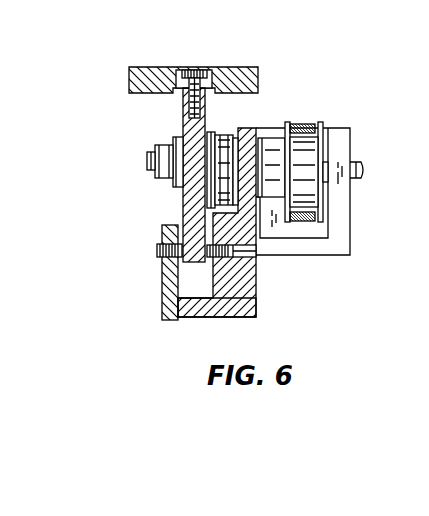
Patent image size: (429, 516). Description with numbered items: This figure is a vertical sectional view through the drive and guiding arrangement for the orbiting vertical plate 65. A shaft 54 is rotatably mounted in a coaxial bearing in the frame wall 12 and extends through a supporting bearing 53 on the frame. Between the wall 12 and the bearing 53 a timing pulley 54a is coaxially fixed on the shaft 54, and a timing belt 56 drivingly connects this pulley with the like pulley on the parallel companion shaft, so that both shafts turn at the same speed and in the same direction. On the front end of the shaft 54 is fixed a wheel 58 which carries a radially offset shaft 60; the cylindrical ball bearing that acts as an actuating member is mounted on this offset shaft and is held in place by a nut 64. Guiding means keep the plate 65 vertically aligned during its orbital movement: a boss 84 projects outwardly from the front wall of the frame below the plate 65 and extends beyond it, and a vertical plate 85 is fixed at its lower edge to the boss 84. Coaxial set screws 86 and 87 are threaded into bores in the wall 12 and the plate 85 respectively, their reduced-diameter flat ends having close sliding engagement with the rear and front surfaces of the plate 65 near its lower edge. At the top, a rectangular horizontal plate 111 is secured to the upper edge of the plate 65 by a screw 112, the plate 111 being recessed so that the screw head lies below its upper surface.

The frame wall 12 is at (247, 288).
The supporting bearing 53 is at (337, 127).
The shaft 54 is at (362, 162).
The timing pulley 54a is at (286, 123).
The timing belt 56 is at (308, 122).
The wheel 58 is at (224, 133).
The offset shaft 60 is at (147, 160).
The nut 64 is at (173, 140).
The vertical plate 65 is at (183, 205).
The boss 84 is at (187, 317).
The vertical plate 85 is at (162, 283).
The set screw 86 is at (256, 253).
The set screw 87 is at (157, 250).
The horizontal plate 111 is at (243, 66).
The screw 112 is at (193, 67).